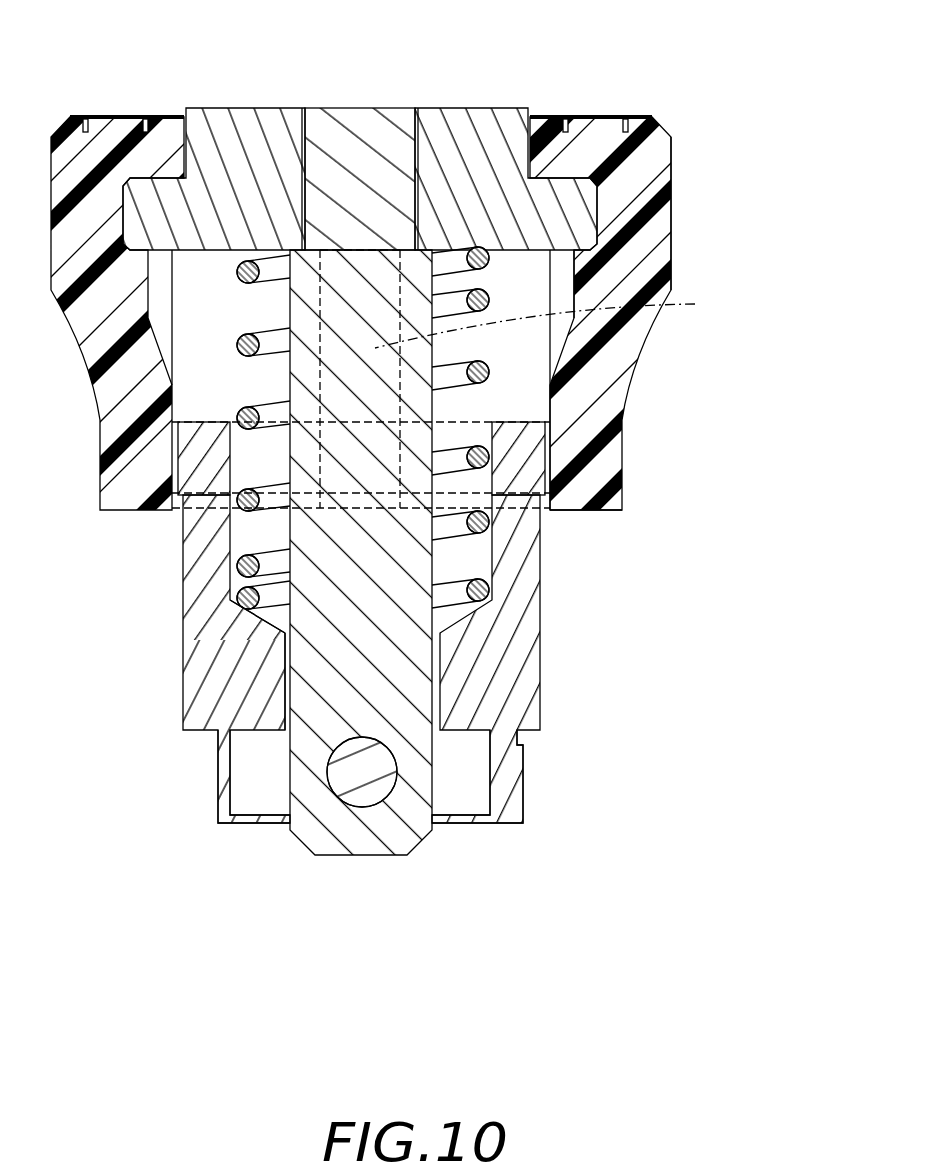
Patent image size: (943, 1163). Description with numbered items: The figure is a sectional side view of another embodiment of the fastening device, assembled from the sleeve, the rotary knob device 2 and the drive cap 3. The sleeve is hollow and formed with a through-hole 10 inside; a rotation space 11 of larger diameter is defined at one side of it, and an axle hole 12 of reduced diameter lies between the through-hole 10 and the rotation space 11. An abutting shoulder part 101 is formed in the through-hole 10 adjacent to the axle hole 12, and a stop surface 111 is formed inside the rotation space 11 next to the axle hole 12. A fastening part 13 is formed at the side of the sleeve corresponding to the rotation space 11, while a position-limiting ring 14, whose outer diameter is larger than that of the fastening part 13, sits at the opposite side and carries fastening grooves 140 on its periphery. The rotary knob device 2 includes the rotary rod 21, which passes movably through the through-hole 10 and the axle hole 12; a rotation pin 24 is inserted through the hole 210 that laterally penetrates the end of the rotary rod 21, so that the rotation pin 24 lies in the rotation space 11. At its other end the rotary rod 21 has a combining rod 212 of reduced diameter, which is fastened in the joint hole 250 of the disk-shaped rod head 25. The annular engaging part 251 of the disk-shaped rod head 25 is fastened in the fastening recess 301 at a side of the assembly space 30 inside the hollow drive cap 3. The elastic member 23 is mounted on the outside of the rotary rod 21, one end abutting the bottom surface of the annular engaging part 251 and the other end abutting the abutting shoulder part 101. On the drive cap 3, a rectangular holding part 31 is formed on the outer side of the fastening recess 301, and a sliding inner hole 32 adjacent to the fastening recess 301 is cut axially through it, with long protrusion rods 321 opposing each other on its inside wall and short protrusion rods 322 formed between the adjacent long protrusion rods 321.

The rotary knob device 2 is at (423, 106).
The drive cap 3 is at (613, 108).
The through-hole 10 is at (258, 535).
The rotation space 11 is at (466, 784).
The axle hole 12 is at (297, 695).
The fastening part 13 is at (226, 772).
The position-limiting ring 14 is at (192, 458).
The rotary rod 21 is at (410, 558).
The elastic member 23 is at (472, 262).
The rotation pin 24 is at (358, 763).
The disk-shaped rod head 25 is at (223, 134).
The assembly space 30 is at (763, 199).
The holding part 31 is at (653, 170).
The sliding inner hole 32 is at (513, 401).
The abutting shoulder part 101 is at (283, 632).
The stop surface 111 is at (455, 730).
The fastening grooves 140 is at (172, 493).
The hole 210 is at (383, 763).
The combining rod 212 is at (294, 134).
The joint hole 250 is at (412, 178).
The annular engaging part 251 is at (123, 198).
The fastening recess 301 is at (672, 199).
The long protrusion rods 321 is at (562, 316).
The short protrusion rods 322 is at (553, 455).